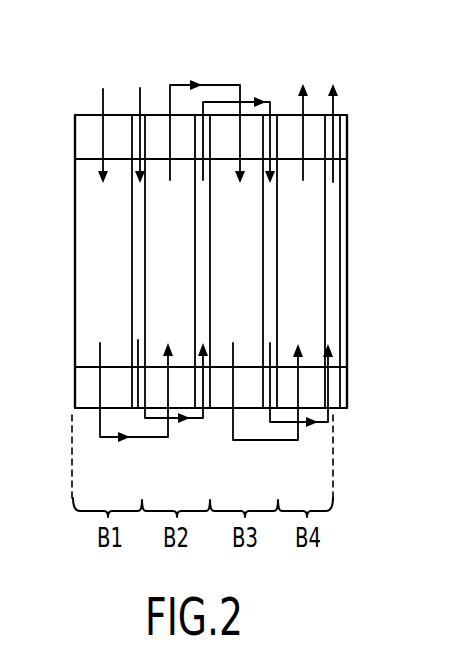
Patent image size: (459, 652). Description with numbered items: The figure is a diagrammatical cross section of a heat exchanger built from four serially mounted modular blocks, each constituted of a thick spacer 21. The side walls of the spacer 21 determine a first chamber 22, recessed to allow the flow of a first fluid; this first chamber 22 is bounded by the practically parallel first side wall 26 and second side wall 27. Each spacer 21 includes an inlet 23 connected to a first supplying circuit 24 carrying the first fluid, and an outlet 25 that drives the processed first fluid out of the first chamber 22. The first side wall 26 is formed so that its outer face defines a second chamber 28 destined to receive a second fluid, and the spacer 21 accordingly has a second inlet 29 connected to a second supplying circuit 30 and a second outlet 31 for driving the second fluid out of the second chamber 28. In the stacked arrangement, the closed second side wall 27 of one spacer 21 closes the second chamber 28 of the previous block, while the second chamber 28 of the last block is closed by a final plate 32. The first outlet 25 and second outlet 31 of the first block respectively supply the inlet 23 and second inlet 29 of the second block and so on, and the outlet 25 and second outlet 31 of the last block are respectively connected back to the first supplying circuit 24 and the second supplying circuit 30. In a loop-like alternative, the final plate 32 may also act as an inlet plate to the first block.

The spacer 21 is at (75, 142).
The first chamber 22 is at (89, 275).
The inlet 23 is at (93, 128).
The first supplying circuit 24 is at (103, 90).
The outlet 25 is at (290, 127).
The first side wall 26 is at (128, 235).
The second side wall 27 is at (72, 185).
The second chamber 28 is at (134, 313).
The second inlet 29 is at (129, 108).
The second supplying circuit 30 is at (140, 88).
The second outlet 31 is at (142, 416).
The final plate 32 is at (344, 256).